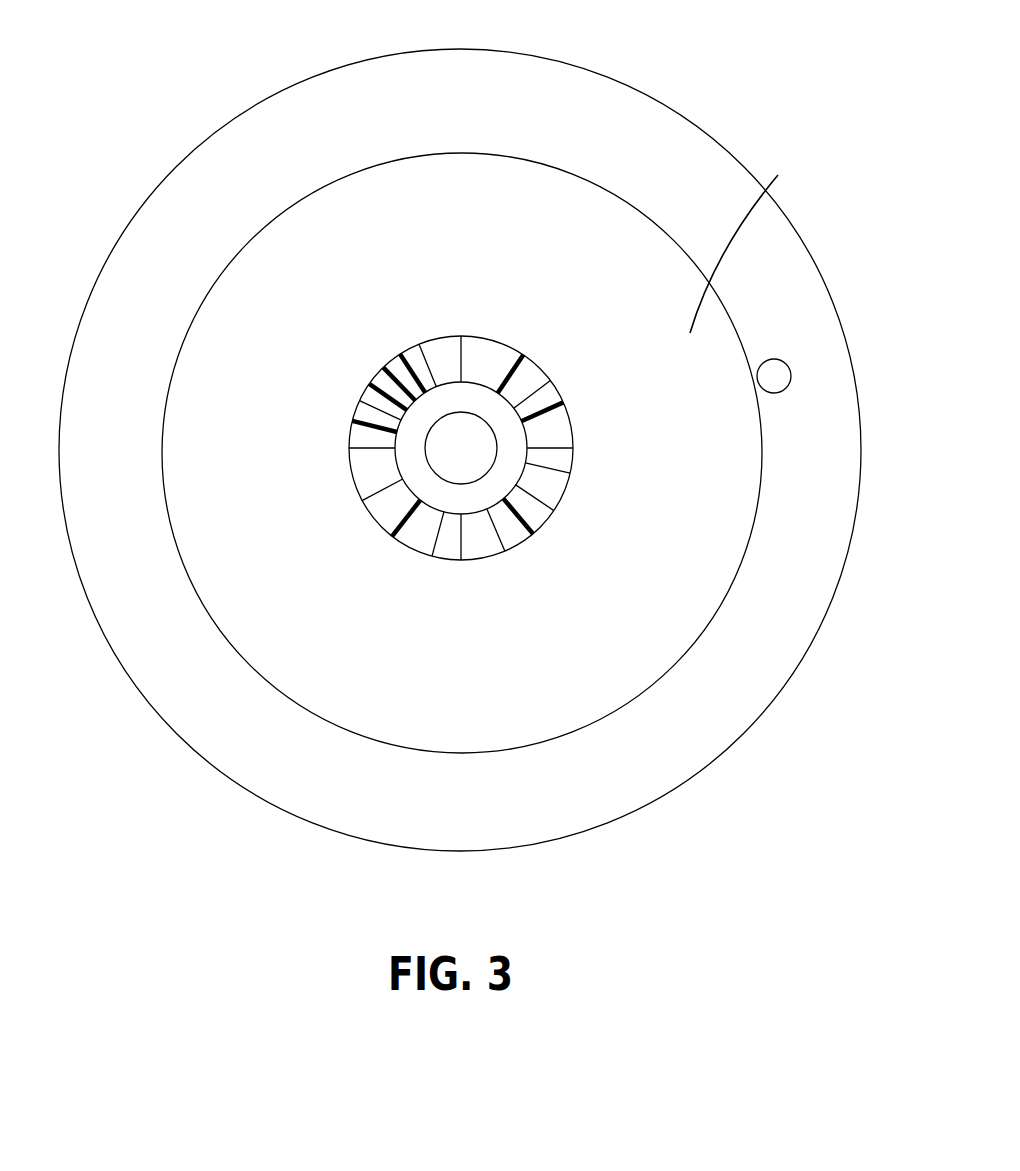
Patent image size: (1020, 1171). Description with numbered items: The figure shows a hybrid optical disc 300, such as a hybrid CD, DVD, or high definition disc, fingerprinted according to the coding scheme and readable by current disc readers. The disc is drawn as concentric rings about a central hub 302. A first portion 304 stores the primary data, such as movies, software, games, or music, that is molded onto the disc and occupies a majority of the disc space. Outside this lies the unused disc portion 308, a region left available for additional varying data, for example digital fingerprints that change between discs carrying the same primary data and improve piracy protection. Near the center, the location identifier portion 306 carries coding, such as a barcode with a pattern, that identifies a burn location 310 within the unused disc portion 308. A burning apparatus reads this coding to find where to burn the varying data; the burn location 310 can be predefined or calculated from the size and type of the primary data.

The hybrid optical disc 300 is at (127, 57).
The central hub 302 is at (461, 448).
The first portion 304 is at (759, 233).
The location identifier portion 306 is at (441, 353).
The unused disc portion 308 is at (673, 130).
The burn location 310 is at (795, 357).